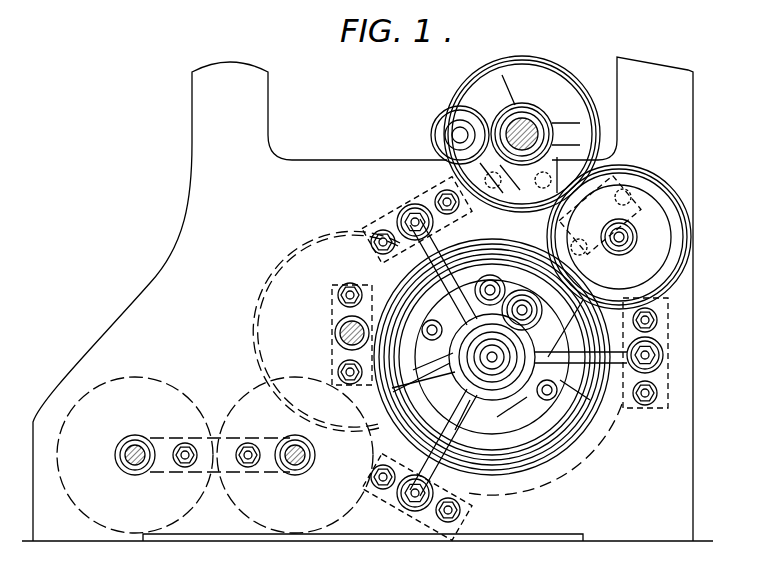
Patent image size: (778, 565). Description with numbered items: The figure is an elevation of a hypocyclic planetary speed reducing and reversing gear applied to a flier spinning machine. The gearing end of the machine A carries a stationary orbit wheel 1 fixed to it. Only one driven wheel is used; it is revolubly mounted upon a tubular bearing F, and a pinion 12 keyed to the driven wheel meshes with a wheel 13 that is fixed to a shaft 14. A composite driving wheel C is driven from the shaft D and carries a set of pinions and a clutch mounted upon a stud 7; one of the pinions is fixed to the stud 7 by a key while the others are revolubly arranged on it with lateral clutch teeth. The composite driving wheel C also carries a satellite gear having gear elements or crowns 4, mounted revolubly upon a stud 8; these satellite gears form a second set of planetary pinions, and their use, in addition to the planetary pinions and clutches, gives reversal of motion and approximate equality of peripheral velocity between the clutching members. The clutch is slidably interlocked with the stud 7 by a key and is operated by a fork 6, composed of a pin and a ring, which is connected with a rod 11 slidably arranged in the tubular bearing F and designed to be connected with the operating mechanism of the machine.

The gearing end of the machine A is at (367, 299).
The shaft D is at (535, 137).
The stud 7 is at (530, 220).
The composite driving wheel C is at (572, 437).
The pinion 12 is at (550, 463).
The rod 11 is at (463, 378).
The fork 6 is at (535, 392).
The stud 8 is at (478, 287).
The gear element or crown 4 is at (425, 268).
The stationary orbit wheel 1 is at (477, 450).
The wheel 13 is at (254, 318).
The shaft 14 is at (336, 338).
The tubular bearing F is at (392, 388).